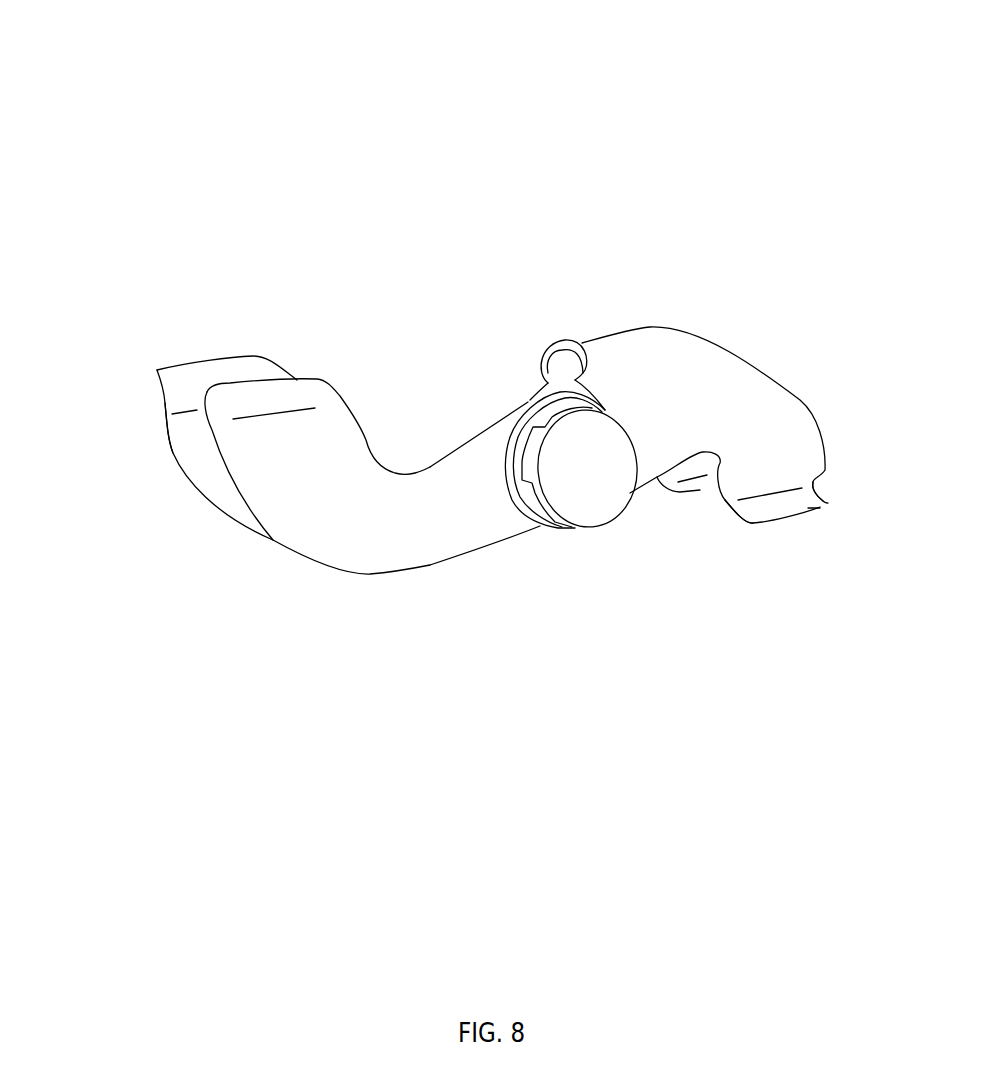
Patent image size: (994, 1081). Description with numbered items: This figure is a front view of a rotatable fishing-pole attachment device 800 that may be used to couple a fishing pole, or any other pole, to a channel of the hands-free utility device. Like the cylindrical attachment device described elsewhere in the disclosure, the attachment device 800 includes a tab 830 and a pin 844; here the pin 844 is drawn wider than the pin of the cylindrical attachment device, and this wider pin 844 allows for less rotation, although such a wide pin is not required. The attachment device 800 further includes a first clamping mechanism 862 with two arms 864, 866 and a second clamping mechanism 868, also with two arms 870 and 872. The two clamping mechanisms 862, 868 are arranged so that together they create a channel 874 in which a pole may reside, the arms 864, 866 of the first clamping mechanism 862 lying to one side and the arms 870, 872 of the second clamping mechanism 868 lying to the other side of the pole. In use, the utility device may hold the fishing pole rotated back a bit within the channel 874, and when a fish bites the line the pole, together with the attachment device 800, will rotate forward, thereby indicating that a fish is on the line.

The rotatable attachment device 800 is at (265, 83).
The first clamping mechanism 862 is at (270, 325).
The arm 864 is at (183, 380).
The arm 866 is at (307, 398).
The channel 874 is at (160, 450).
The pin 844 is at (535, 447).
The tab 830 is at (590, 512).
The arm 872 is at (690, 490).
The arm 870 is at (820, 510).
The second clamping mechanism 868 is at (787, 540).